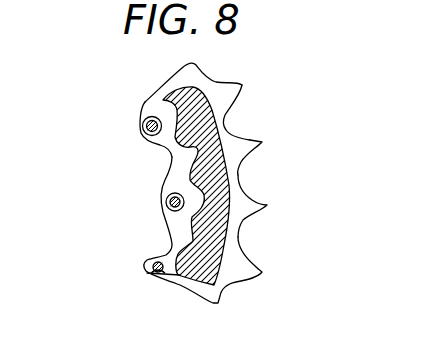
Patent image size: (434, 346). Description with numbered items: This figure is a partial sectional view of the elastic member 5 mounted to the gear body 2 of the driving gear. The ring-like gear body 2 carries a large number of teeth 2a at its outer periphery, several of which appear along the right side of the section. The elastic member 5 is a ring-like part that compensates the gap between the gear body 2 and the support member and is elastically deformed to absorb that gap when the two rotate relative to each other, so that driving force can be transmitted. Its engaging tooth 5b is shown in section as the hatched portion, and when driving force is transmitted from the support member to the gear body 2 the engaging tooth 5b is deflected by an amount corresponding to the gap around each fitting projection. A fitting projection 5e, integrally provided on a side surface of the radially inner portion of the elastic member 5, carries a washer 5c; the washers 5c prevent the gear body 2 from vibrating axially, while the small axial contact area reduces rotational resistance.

The gear body 2 is at (259, 142).
The teeth 2a is at (268, 205).
The elastic member 5 is at (224, 122).
The engaging tooth 5b is at (188, 173).
The washer 5c is at (141, 123).
The fitting projection 5e is at (142, 131).